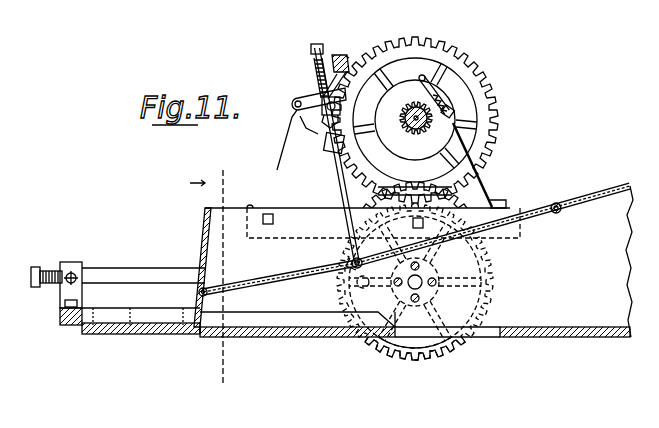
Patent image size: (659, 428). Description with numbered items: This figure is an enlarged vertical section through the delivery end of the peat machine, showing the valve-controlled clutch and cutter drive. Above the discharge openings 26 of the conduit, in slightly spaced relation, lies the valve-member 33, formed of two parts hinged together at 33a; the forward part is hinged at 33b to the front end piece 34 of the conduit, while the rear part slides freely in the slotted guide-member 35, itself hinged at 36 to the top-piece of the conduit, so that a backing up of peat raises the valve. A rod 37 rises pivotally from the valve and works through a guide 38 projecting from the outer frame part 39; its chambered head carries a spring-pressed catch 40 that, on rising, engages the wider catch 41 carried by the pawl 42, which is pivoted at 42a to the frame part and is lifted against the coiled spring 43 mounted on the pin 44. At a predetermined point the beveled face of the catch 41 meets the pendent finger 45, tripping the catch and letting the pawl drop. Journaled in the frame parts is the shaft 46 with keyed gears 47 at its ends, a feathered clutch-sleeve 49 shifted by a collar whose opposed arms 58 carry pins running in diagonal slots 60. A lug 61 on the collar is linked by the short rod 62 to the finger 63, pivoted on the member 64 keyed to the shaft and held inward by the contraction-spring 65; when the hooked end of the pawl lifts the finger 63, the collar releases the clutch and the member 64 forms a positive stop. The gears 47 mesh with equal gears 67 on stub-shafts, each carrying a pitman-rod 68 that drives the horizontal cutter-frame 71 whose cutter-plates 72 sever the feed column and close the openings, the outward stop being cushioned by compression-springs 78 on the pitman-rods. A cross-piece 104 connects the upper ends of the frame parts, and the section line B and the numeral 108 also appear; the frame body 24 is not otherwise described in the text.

The frame part 108 is at (102, 7).
The frame 24 is at (416, 261).
The discharge openings 26 is at (283, 334).
The valve-member 33 is at (288, 284).
The hinge 33a is at (356, 256).
The hinge 33b is at (201, 293).
The front end piece 34 is at (206, 254).
The slotted guide-member 35 is at (522, 218).
The hinge 36 is at (558, 205).
The rod 37 is at (352, 228).
The guide 38 is at (327, 147).
The frame part 39 is at (297, 149).
The spring-pressed catch 40 is at (323, 114).
The catch 41 is at (340, 76).
The pawl 42 is at (386, 62).
The pivot / hooked end 42a is at (295, 104).
The coiled spring 43 is at (313, 78).
The pin 44 is at (311, 52).
The pendent finger 45 is at (339, 55).
The shaft 46 is at (411, 133).
The gears 47 is at (472, 80).
The feathered clutch-sleeve 49 is at (420, 134).
The opposed arms 58 is at (401, 124).
The diagonally-disposed slots 60 is at (82, 268).
The radially-projecting lug 61 is at (452, 112).
The short rod or link 62 is at (448, 82).
The finger 63 is at (410, 72).
The member 64 is at (380, 118).
The coiled contraction-spring 65 is at (477, 93).
The gears 67 is at (424, 357).
The pitman-rod 68 is at (111, 269).
The cutter-frame 71 is at (117, 310).
The cutter-plates 72 is at (158, 328).
The compression-springs 78 is at (50, 268).
The cross-piece 104 is at (346, 56).
The section line B B is at (206, 276).